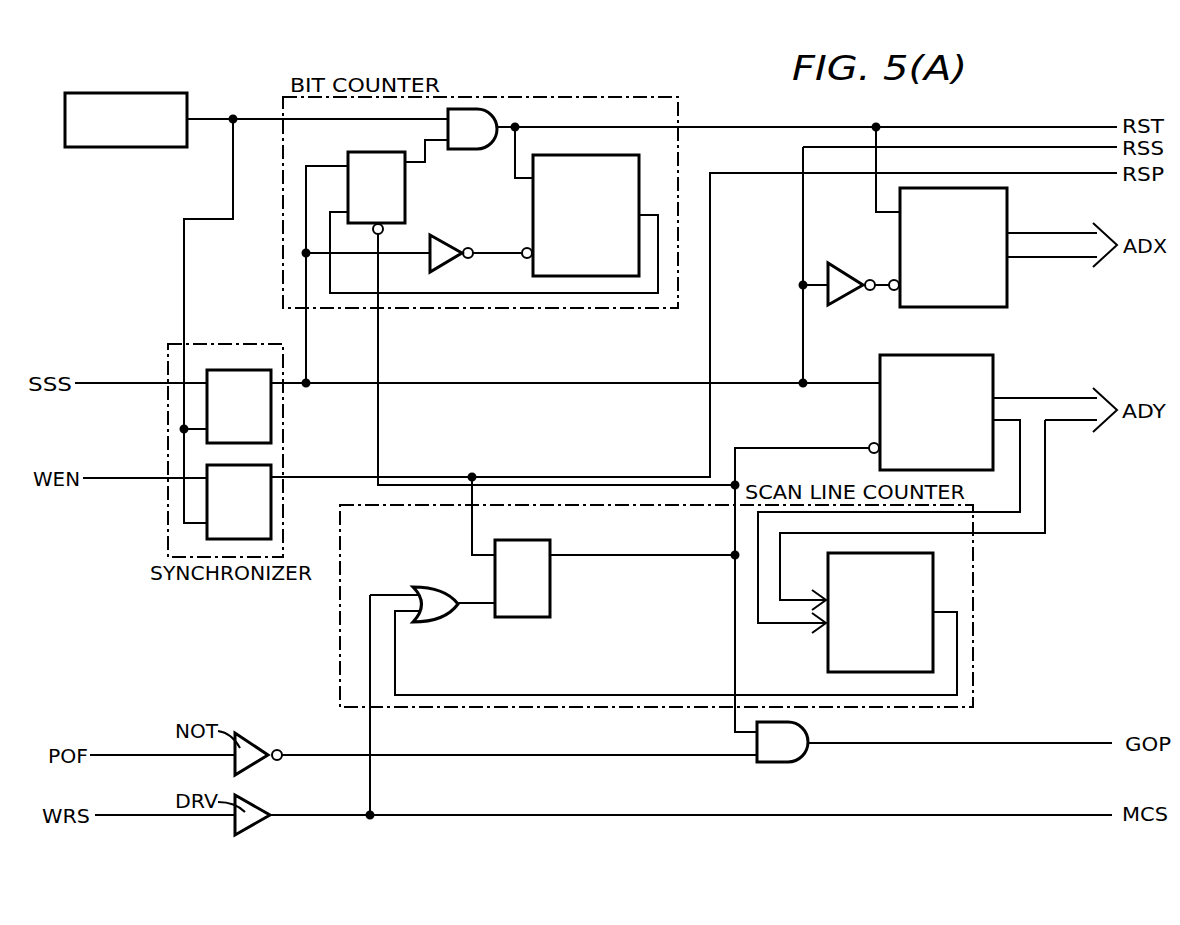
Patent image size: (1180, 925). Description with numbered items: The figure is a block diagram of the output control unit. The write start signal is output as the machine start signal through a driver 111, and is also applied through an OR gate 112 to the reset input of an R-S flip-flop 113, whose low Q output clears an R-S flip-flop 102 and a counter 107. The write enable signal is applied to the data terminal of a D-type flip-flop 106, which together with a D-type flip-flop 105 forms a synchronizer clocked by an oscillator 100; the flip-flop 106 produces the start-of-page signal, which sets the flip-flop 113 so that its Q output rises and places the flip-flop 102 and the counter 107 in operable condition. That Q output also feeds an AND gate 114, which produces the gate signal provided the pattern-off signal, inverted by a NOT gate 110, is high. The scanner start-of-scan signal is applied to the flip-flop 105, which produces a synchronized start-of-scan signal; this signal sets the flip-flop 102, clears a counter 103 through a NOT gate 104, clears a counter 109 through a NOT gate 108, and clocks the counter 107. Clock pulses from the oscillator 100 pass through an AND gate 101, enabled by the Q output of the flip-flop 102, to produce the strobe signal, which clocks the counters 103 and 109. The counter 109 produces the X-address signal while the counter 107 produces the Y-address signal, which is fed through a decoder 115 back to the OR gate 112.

The oscillator 100 is at (95, 148).
The AND gate 101 is at (492, 113).
The R-S flip-flop 102 is at (405, 193).
The counter 103 is at (533, 226).
The NOT gate 104 is at (445, 238).
The D-type flip-flop 105 is at (271, 416).
The D-type flip-flop 106 is at (271, 470).
The counter 107 is at (995, 372).
The NOT gate 108 is at (838, 262).
The counter 109 is at (1007, 206).
The NOT gate 110 is at (256, 740).
The driver 111 is at (262, 803).
The OR gate 112 is at (430, 587).
The R-S flip-flop 113 is at (550, 597).
The AND gate 114 is at (808, 736).
The decoder 115 is at (828, 561).